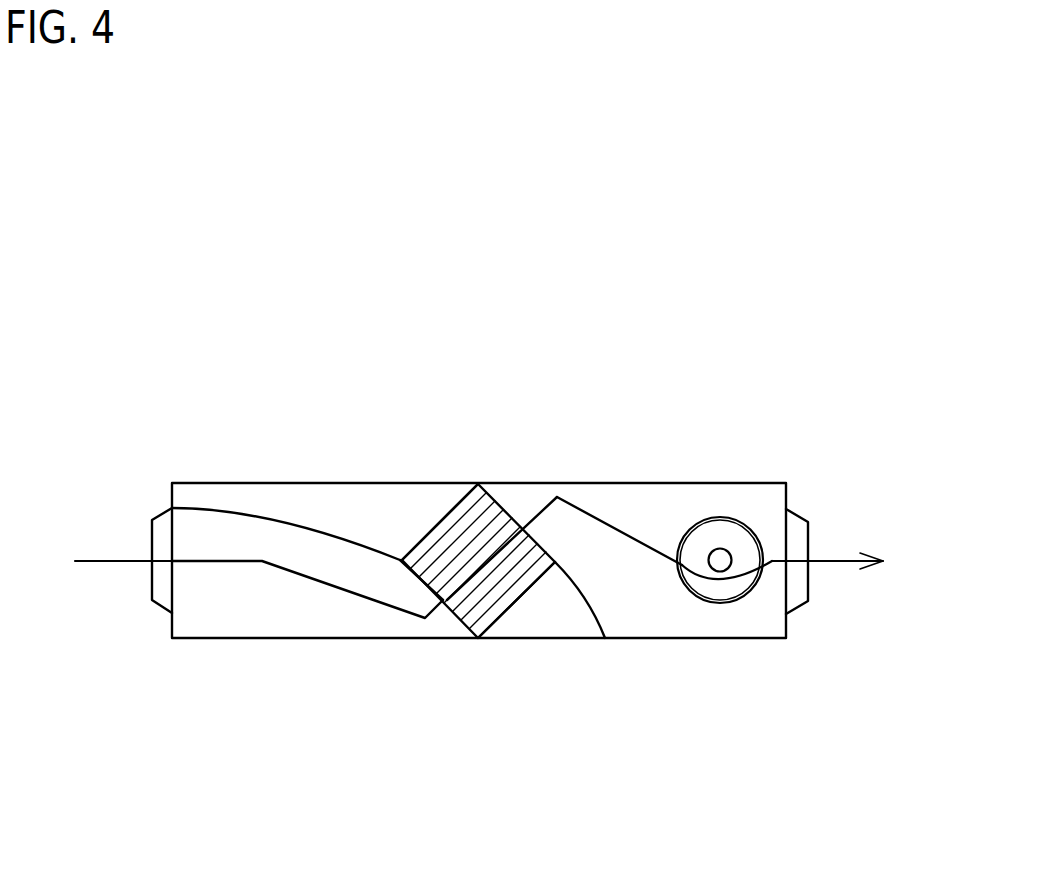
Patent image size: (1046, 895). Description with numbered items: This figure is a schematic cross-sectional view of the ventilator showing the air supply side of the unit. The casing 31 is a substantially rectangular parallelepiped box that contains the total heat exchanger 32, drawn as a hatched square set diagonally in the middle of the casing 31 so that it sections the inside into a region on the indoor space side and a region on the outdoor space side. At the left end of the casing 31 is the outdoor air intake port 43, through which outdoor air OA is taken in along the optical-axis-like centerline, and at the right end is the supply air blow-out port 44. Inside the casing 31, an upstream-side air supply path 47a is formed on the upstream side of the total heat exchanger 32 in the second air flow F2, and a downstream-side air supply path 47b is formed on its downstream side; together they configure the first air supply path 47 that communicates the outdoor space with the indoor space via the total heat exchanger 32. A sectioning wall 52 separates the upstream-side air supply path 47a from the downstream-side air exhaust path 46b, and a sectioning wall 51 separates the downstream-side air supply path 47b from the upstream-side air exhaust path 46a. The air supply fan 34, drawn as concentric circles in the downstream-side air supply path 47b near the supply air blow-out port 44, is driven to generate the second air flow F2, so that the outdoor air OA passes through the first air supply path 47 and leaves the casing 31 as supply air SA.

The casing 31 is at (333, 483).
The total heat exchanger 32 is at (508, 518).
The air supply fan 34 is at (718, 518).
The outdoor air intake port 43 is at (152, 575).
The supply air blow-out port 44 is at (808, 579).
The upstream-side air exhaust path 46a is at (555, 608).
The downstream-side air exhaust path 46b is at (402, 513).
The first air supply path 47 is at (427, 612).
The upstream-side air supply path 47a is at (307, 584).
The downstream-side air supply path 47b is at (564, 584).
The sectioning wall 51 is at (595, 596).
The sectioning wall 52 is at (253, 512).
The second air flow F2 is at (607, 522).
The outdoor air OA is at (147, 561).
The supply air SA is at (846, 561).